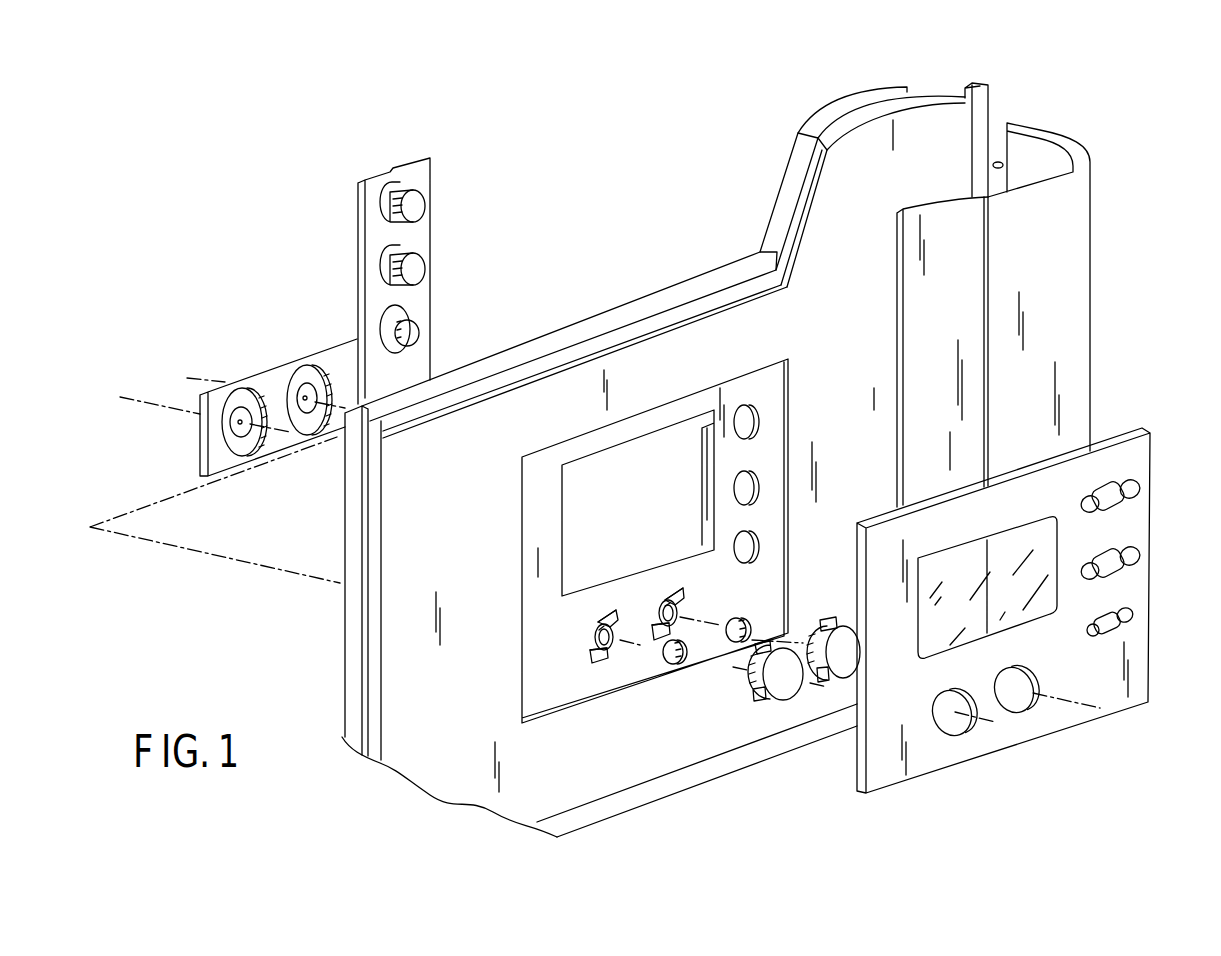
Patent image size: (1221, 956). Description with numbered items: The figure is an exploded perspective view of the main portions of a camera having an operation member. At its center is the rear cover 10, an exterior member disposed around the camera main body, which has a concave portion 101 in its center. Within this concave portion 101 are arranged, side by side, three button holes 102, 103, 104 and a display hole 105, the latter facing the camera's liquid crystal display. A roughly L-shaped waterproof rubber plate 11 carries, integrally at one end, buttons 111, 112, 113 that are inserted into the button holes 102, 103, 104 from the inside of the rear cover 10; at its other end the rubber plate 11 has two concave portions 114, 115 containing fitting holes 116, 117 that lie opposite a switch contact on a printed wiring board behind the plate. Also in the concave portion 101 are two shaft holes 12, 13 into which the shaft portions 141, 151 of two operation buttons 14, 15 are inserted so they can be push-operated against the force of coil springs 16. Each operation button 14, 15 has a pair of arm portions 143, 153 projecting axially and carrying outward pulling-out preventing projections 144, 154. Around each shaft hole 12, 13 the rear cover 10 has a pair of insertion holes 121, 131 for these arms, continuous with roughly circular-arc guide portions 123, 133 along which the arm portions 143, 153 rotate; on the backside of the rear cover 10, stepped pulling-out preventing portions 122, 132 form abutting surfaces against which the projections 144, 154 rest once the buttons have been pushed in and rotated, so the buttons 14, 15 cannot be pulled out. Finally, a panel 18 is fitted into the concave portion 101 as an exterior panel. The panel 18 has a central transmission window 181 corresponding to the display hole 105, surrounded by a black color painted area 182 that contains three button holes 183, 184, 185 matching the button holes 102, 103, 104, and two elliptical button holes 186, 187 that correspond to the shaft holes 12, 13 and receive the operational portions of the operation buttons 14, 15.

The rear cover 10 is at (347, 668).
The concave portion 101 is at (530, 511).
The button hole 102 is at (760, 419).
The button hole 103 is at (760, 484).
The button hole 104 is at (757, 547).
The display hole 105 is at (572, 485).
The waterproof rubber plate 11 is at (343, 340).
The button 111 is at (426, 203).
The button 112 is at (426, 269).
The button 113 is at (419, 333).
The concave portion 114 is at (244, 397).
The concave portion 115 is at (305, 366).
The fitting hole 116 is at (240, 422).
The fitting hole 117 is at (304, 397).
The shaft hole 12 is at (618, 628).
The insertion hole 121 is at (615, 622).
The pulling-out preventing portion 122 is at (601, 620).
The guide portion 123 is at (597, 614).
The shaft hole 13 is at (680, 622).
The insertion hole 131 is at (663, 592).
The pulling-out preventing portion 132 is at (667, 598).
The guide portion 133 is at (613, 600).
The operation button 14 is at (780, 699).
The shaft portion 141 is at (771, 713).
The arm portion 143 is at (768, 636).
The pulling-out preventing projection 144 is at (728, 617).
The operation button 15 is at (842, 677).
The shaft portion 151 is at (836, 692).
The arm portion 153 is at (842, 617).
The pulling-out preventing projection 154 is at (823, 619).
The coil spring 16 is at (678, 596).
The panel 18 is at (1110, 434).
The transmission window 181 is at (1017, 533).
The black color painted area 182 is at (1143, 680).
The button hole 183 is at (1140, 488).
The button hole 184 is at (1138, 553).
The button hole 185 is at (1132, 615).
The button hole 186 is at (960, 733).
The button hole 187 is at (1033, 702).